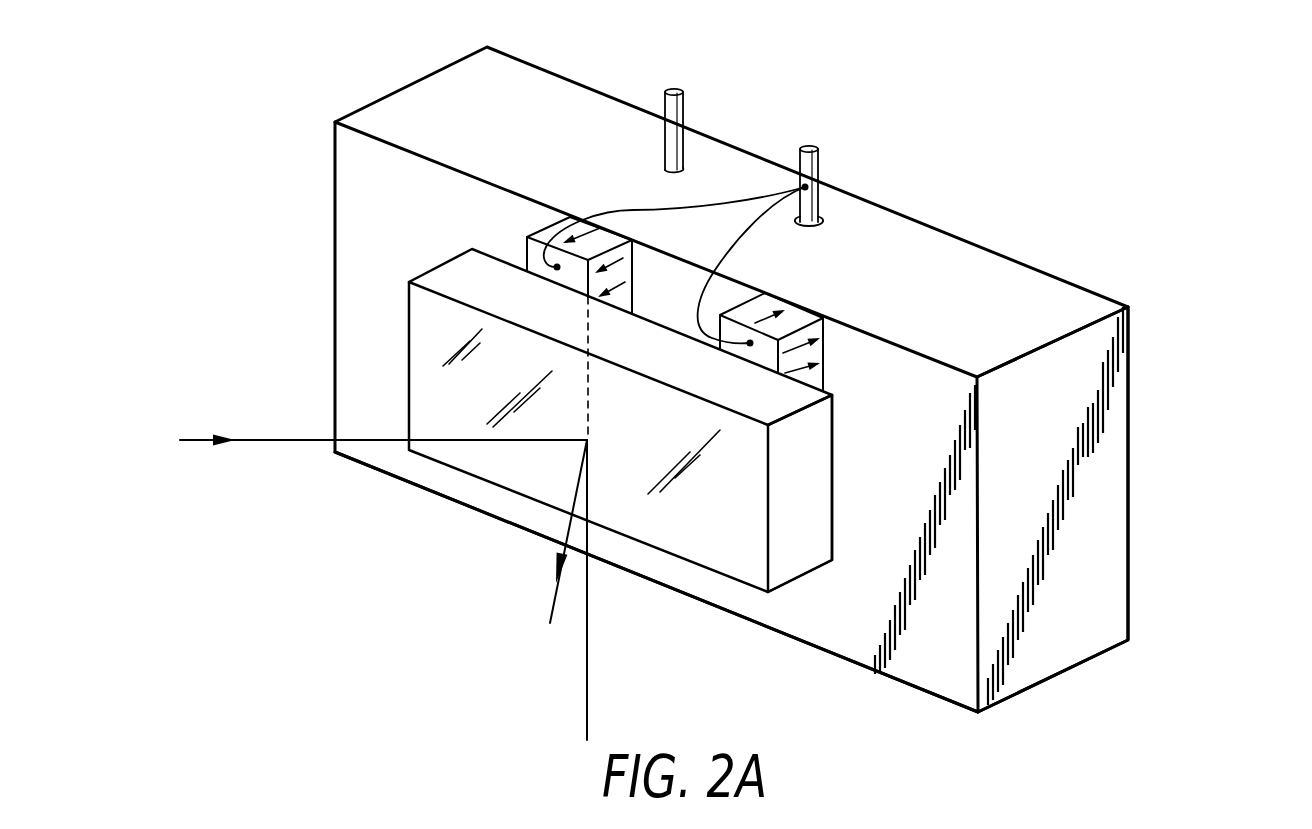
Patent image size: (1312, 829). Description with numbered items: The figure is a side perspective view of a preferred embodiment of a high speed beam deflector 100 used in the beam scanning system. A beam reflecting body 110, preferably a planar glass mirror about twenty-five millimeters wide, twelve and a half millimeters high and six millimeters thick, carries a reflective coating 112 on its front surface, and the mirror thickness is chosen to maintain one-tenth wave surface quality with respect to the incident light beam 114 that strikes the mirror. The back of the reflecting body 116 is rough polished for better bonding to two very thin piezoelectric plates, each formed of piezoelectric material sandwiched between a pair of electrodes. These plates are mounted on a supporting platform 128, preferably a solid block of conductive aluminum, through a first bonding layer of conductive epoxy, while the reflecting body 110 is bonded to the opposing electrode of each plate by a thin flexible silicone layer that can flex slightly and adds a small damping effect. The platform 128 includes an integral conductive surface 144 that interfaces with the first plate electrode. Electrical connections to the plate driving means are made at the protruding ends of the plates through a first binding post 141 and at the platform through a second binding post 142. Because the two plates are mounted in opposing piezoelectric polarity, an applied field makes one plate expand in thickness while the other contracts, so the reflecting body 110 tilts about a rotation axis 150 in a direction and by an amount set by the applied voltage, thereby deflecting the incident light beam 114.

The beam deflector 100 is at (990, 95).
The beam reflecting body 110 is at (394, 355).
The reflective coating 112 is at (735, 538).
The incident light beam 114 is at (297, 444).
The back of the reflecting body 116 is at (834, 500).
The supporting platform 128 is at (1146, 610).
The first binding post 141 is at (812, 145).
The second binding post 142 is at (675, 90).
The integral conductive surface 144 is at (830, 603).
The rotation axis 150 is at (589, 628).